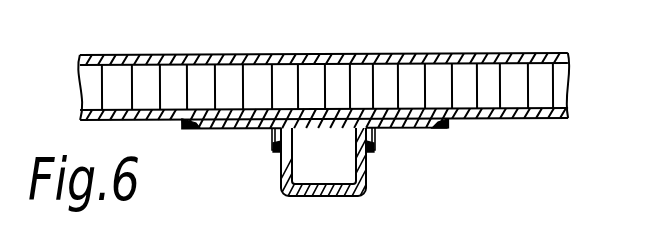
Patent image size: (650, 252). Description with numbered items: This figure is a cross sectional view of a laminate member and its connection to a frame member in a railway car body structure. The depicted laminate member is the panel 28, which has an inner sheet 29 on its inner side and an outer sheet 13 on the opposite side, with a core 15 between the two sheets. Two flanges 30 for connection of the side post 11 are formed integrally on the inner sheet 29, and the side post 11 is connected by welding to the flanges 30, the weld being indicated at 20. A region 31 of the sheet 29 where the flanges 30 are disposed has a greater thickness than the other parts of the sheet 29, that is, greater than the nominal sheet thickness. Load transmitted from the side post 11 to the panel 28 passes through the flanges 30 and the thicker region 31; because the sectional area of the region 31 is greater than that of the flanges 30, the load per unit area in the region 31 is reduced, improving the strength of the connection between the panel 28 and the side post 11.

The side post 11 is at (327, 198).
The top face sheet 13 is at (505, 54).
The core 15 is at (544, 84).
The flange 20 is at (278, 152).
The panel 28 is at (354, 62).
The inner sheet 29 is at (541, 119).
The flanges 30 is at (275, 148).
The region 31 is at (193, 129).